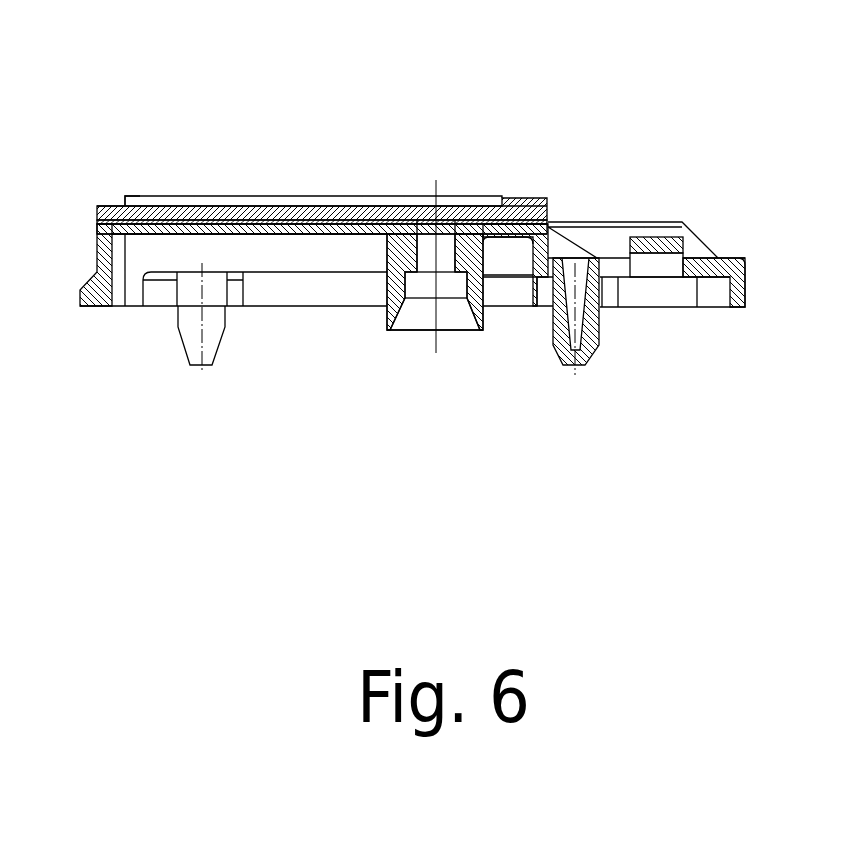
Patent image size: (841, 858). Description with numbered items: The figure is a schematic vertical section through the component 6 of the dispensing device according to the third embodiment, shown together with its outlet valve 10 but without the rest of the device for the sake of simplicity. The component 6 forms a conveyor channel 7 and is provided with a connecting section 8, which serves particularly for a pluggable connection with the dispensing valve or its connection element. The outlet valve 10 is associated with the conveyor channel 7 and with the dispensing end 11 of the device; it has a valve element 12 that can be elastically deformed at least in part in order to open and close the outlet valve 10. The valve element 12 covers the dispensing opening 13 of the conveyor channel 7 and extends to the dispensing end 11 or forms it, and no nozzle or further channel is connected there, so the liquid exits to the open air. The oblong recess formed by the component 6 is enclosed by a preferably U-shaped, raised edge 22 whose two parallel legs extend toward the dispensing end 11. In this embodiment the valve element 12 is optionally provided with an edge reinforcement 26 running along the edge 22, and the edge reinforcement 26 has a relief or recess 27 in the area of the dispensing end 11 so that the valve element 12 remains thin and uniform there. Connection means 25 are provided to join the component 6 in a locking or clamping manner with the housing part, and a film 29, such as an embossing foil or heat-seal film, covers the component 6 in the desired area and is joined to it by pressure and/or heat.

The component 6 is at (640, 179).
The conveyor channel 7 is at (484, 311).
The connecting section 8 is at (462, 315).
The outlet valve 10 is at (360, 188).
The dispensing end 11 is at (84, 219).
The valve element 12 is at (268, 212).
The dispensing opening 13 is at (428, 252).
The edge 22 is at (550, 224).
The connection means 25 is at (210, 345).
The edge reinforcement 26 is at (201, 204).
The recess 27 is at (125, 206).
The film 29 is at (327, 234).